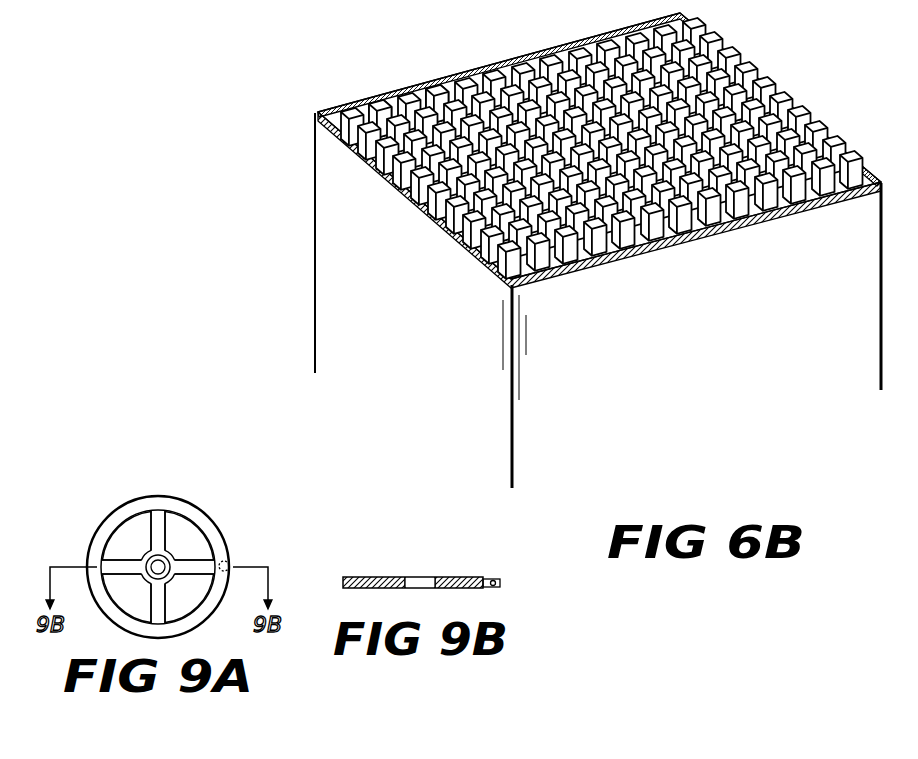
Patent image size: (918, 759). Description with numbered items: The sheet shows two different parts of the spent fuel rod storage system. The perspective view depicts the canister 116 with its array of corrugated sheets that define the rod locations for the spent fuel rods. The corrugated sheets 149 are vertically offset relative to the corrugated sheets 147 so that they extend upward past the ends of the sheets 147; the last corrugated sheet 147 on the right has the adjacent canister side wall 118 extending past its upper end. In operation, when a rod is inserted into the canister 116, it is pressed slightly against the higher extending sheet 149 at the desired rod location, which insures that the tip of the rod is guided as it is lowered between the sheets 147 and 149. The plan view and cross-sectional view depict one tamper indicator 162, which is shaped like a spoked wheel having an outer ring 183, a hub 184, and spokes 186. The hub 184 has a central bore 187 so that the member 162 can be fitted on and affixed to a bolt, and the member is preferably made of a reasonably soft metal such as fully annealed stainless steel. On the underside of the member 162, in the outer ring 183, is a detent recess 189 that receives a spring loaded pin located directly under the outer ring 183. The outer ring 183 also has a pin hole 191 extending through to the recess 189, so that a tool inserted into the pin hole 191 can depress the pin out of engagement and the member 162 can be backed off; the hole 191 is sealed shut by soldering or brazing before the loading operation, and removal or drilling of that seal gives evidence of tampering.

In FIG. 6B, the canister 116 is at (315, 183).
In FIG. 6B, the canister side wall 118 is at (800, 112).
In FIG. 6B, the corrugated sheets 147 is at (350, 130).
In FIG. 6B, the corrugated sheets 149 is at (366, 106).
In FIG. 9A, the tamper indicator 162 is at (245, 534).
In FIG. 9B, the tamper indicator 162 is at (343, 587).
In FIG. 9A, the outer ring 183 is at (89, 555).
In FIG. 9A, the hub 184 is at (140, 548).
In FIG. 9A, the spokes 186 is at (178, 524).
In FIG. 9A, the central bore 187 is at (155, 563).
In FIG. 9B, the central bore 187 is at (416, 576).
In FIG. 9B, the detent recess 189 is at (492, 589).
In FIG. 9B, the pin hole 191 is at (494, 578).